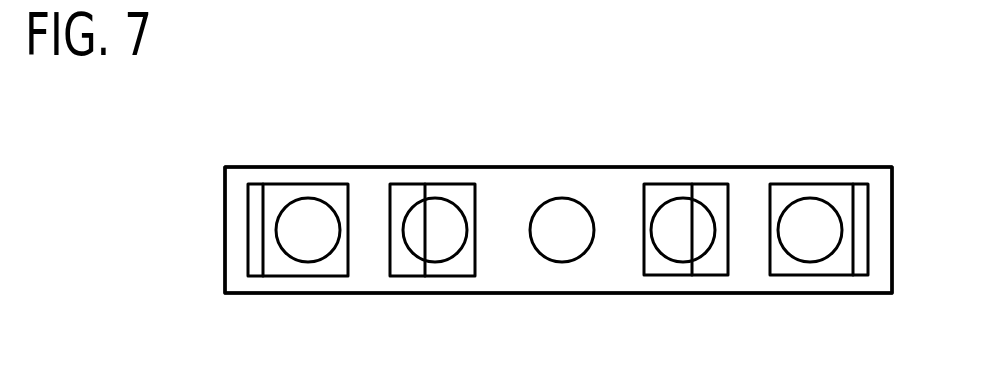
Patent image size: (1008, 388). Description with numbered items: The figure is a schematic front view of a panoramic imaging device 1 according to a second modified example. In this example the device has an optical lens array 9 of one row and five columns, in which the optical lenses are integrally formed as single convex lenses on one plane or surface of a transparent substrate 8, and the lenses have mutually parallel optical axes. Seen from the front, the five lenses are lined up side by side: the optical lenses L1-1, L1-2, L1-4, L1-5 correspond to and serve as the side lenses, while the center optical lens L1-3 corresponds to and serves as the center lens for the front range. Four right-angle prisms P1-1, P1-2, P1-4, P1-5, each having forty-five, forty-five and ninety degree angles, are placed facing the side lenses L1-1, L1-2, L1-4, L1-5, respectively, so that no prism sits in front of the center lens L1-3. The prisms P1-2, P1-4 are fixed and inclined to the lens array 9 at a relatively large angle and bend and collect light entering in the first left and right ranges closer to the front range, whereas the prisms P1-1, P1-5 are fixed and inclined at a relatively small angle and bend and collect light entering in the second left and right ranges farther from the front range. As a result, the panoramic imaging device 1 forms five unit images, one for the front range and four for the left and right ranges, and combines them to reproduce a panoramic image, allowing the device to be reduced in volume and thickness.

The panoramic imaging device 1 is at (665, 63).
The transparent substrate 8 is at (513, 180).
The optical lens array 9 is at (758, 122).
The optical lens L1-1 is at (300, 213).
The optical lens L1-2 is at (438, 208).
The optical lens L1-3 is at (563, 208).
The optical lens L1-4 is at (683, 211).
The optical lens L1-5 is at (808, 213).
The 45-45-90 right-angle prism P1-1 is at (280, 265).
The 45-45-90 right-angle prism P1-2 is at (457, 265).
The 45-45-90 right-angle prism P1-4 is at (712, 262).
The 45-45-90 right-angle prism P1-5 is at (838, 262).